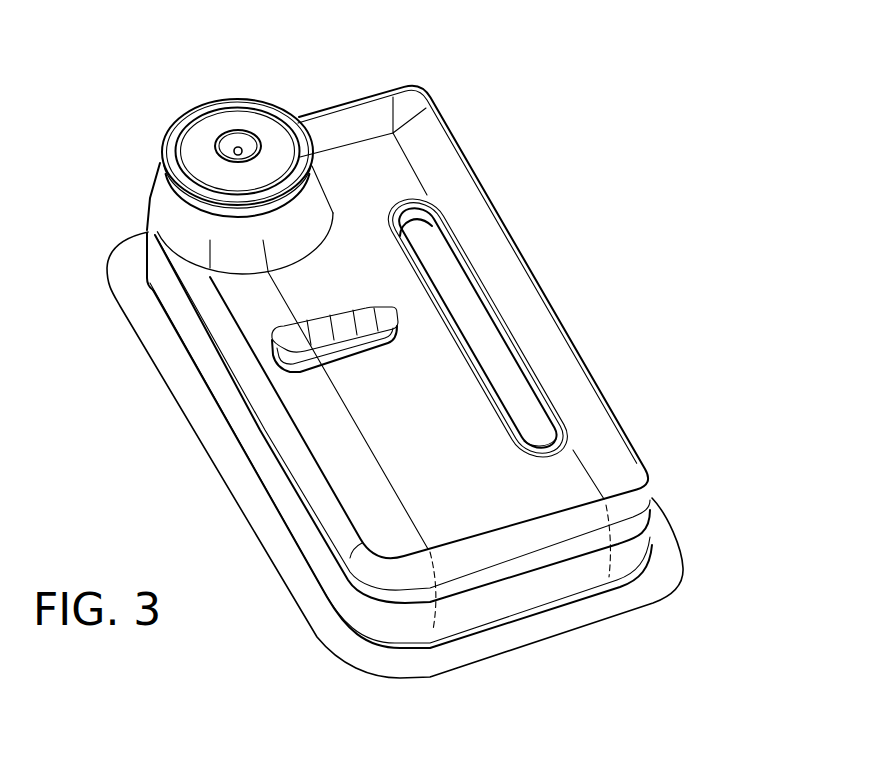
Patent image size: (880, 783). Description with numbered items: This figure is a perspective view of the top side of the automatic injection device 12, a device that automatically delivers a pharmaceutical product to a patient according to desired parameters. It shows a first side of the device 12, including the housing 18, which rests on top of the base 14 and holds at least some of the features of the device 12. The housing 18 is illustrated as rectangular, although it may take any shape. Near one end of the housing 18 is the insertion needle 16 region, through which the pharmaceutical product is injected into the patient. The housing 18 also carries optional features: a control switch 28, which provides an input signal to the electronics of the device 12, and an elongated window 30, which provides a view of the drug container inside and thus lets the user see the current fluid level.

The automatic injection device 12 is at (545, 142).
The base 14 is at (663, 559).
The insertion needle 16 is at (239, 150).
The housing 18 is at (588, 426).
The control switch 28 is at (294, 340).
The window 30 is at (500, 366).